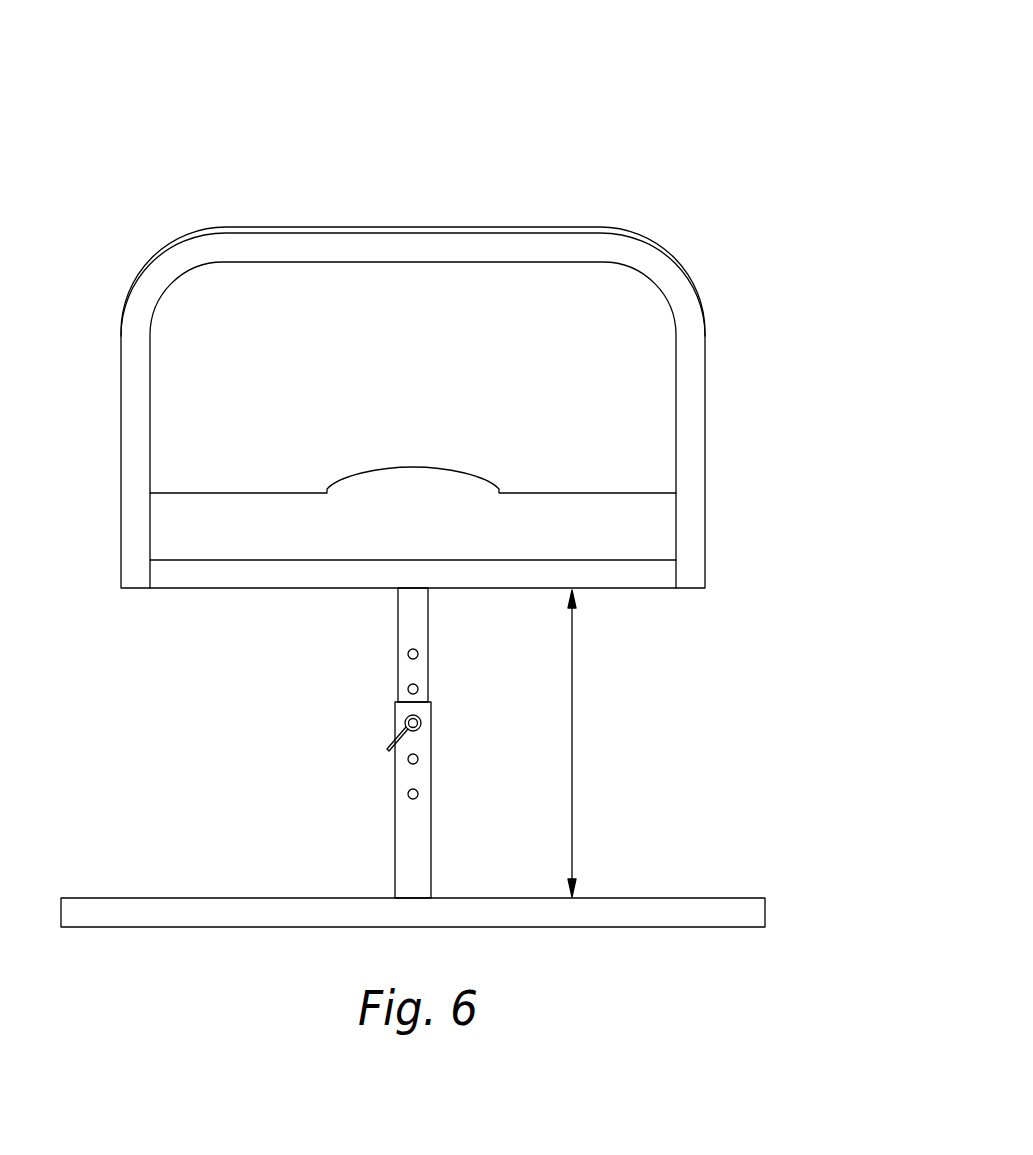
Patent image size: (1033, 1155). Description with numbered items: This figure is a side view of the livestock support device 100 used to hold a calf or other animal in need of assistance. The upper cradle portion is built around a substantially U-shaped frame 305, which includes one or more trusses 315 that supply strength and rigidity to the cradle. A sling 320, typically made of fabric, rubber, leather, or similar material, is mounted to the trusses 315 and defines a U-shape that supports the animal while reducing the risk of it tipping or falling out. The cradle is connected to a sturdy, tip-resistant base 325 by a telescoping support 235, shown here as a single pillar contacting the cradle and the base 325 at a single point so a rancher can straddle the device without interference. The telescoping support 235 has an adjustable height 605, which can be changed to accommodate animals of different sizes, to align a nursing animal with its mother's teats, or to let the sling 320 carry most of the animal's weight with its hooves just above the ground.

The livestock support device 100 is at (740, 229).
The frame 305 is at (697, 287).
The trusses 315 is at (637, 238).
The sling 320 is at (215, 342).
The telescoping support 235 is at (395, 802).
The base 325 is at (716, 927).
The adjustable height 605 is at (570, 803).